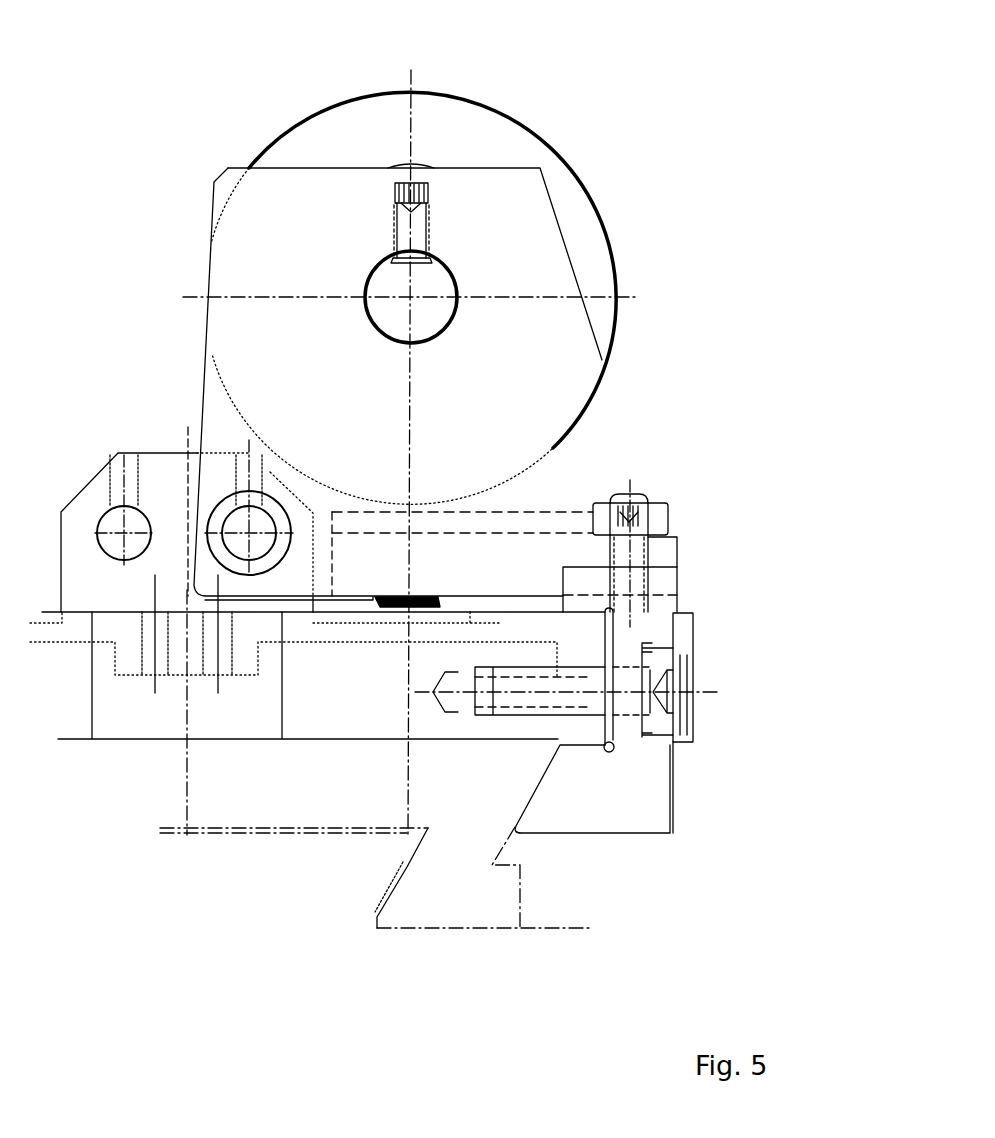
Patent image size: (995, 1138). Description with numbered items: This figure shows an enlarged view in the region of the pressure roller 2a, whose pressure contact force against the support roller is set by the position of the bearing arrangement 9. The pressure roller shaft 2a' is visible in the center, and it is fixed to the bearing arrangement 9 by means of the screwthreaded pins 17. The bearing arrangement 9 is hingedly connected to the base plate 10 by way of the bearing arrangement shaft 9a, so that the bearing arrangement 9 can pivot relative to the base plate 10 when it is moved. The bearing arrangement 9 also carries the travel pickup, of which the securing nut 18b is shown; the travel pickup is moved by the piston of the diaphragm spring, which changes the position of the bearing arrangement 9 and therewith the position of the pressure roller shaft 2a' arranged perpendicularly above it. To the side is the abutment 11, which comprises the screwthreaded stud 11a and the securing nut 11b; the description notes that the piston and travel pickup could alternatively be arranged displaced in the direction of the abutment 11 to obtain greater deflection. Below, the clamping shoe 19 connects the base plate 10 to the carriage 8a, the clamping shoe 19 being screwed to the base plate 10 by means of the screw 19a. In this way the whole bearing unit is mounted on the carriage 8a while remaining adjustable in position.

The pressure roller 2a is at (412, 258).
The pressure roller shaft 2a' is at (472, 184).
The screwthreaded pins 17 is at (397, 203).
The bearing arrangement 9 is at (257, 267).
The bearing arrangement shaft 9a is at (242, 525).
The securing nut 18b is at (405, 602).
The abutment 11 is at (655, 493).
The screwthreaded stud 11a is at (637, 560).
The securing nut 11b is at (663, 513).
The base plate 10 is at (683, 632).
The screw 19a is at (690, 723).
The clamping shoe 19 is at (647, 810).
The carriage 8a is at (490, 897).